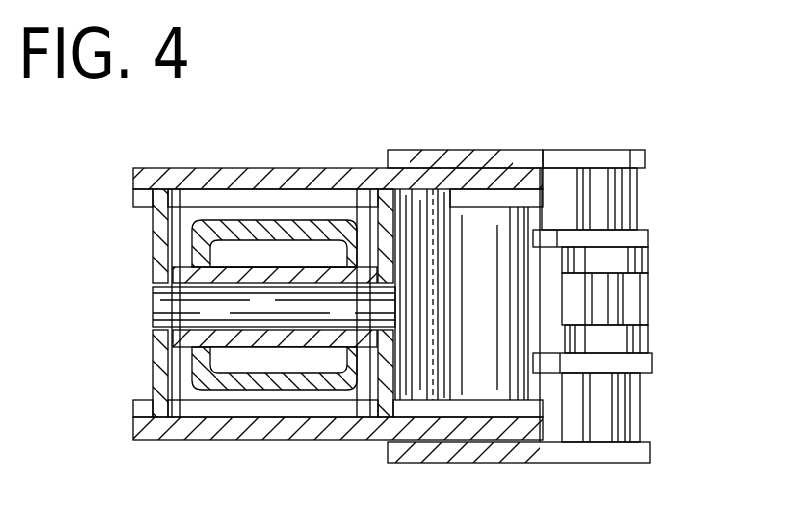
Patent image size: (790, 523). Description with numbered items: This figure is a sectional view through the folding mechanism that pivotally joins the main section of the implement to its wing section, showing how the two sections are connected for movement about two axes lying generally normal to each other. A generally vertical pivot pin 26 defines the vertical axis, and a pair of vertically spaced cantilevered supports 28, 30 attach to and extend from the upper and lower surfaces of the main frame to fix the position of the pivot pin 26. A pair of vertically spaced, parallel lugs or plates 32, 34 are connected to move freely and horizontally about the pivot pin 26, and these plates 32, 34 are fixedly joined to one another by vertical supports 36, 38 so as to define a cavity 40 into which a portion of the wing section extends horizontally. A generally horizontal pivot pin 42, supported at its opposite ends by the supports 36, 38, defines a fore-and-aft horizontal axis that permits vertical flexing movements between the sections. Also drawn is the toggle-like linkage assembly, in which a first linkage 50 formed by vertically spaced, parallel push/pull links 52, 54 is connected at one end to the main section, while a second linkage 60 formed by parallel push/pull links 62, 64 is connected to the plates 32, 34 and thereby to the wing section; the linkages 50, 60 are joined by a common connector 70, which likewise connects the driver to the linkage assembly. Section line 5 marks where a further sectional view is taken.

The vertical pivot pin 26 is at (515, 380).
The cantilevered support 28 is at (502, 203).
The cantilevered support 30 is at (479, 407).
The plate 32 is at (250, 176).
The plate 34 is at (237, 431).
The vertical support 36 is at (392, 426).
The vertical support 38 is at (160, 208).
The cavity 40 is at (308, 195).
The horizontal pivot pin 42 is at (167, 312).
The first linkage 50 is at (660, 362).
The push/pull link 52 is at (641, 239).
The push/pull link 54 is at (641, 366).
The second linkage 60 is at (658, 158).
The push/pull link 62 is at (567, 161).
The push/pull link 64 is at (572, 456).
The common connector 70 is at (623, 421).
The section line 5- 5 is at (110, 303).